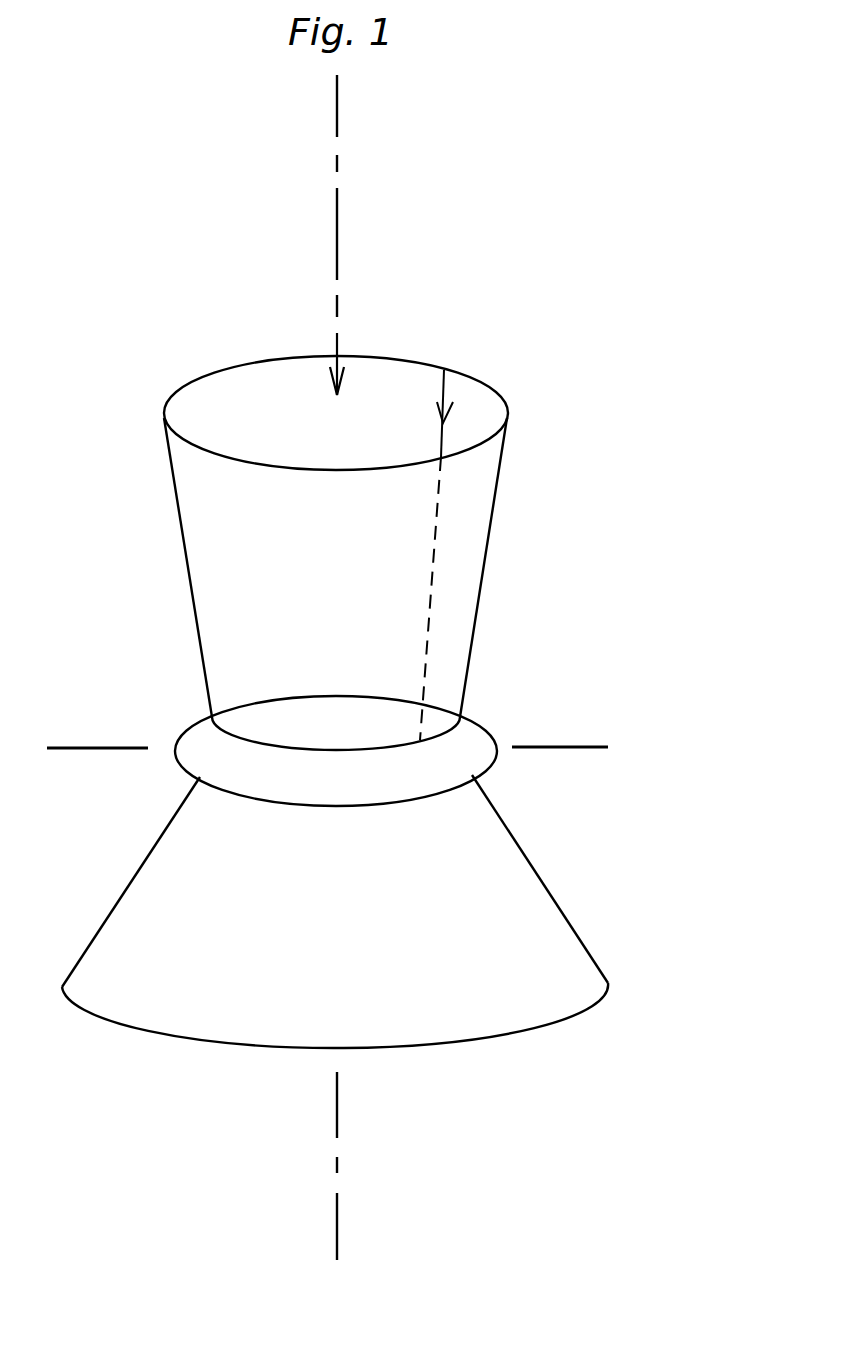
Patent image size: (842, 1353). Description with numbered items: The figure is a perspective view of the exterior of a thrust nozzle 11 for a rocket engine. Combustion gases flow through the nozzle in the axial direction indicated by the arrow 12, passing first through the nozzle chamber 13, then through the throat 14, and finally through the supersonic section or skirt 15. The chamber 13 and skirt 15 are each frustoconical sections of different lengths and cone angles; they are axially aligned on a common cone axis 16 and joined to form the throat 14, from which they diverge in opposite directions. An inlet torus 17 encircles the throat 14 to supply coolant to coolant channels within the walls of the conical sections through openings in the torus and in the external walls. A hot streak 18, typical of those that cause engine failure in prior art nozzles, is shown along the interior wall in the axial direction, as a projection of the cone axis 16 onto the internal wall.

The thrust nozzle 11 is at (627, 397).
The arrow 12 is at (337, 308).
The nozzle chamber 13 is at (480, 600).
The throat 14 is at (633, 747).
The supersonic section or skirt 15 is at (555, 895).
The cone axis 16 is at (337, 212).
The inlet torus 17 is at (487, 710).
The hot streak 18 is at (447, 390).